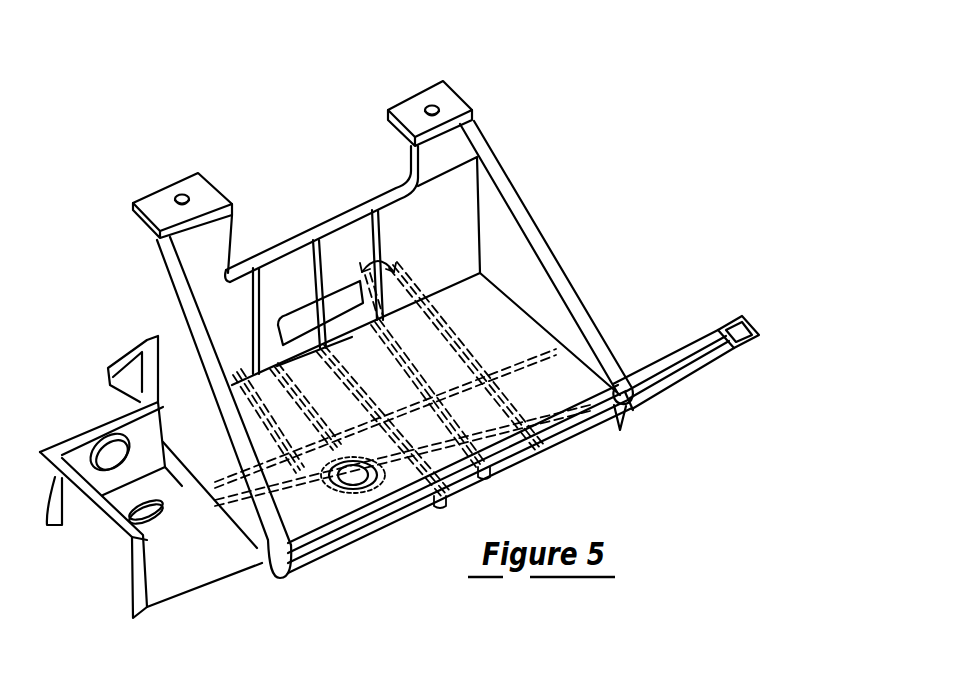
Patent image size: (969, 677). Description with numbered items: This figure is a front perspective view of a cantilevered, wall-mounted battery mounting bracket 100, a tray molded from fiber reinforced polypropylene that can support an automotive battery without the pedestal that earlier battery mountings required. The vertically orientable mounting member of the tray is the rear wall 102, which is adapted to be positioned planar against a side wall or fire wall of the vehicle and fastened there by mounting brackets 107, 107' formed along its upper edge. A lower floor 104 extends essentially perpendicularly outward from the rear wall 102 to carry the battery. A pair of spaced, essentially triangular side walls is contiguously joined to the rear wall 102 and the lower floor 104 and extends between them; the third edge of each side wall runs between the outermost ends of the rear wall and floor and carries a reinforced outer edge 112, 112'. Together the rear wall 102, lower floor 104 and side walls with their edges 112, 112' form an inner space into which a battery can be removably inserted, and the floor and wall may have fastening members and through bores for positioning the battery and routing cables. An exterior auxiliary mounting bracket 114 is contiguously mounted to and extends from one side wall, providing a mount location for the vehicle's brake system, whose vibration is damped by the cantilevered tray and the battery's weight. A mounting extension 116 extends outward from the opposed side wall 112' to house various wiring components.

The battery mounting bracket 100 is at (580, 131).
The rear wall 102 is at (334, 231).
The lower floor 104 is at (560, 447).
The mounting bracket 107 is at (174, 173).
The mounting bracket 107' is at (424, 85).
The reinforced outer edge 112 is at (180, 396).
The reinforced outer edge 112' is at (537, 275).
The exterior auxiliary mounting bracket 114 is at (203, 587).
The mounting extension 116 is at (725, 364).